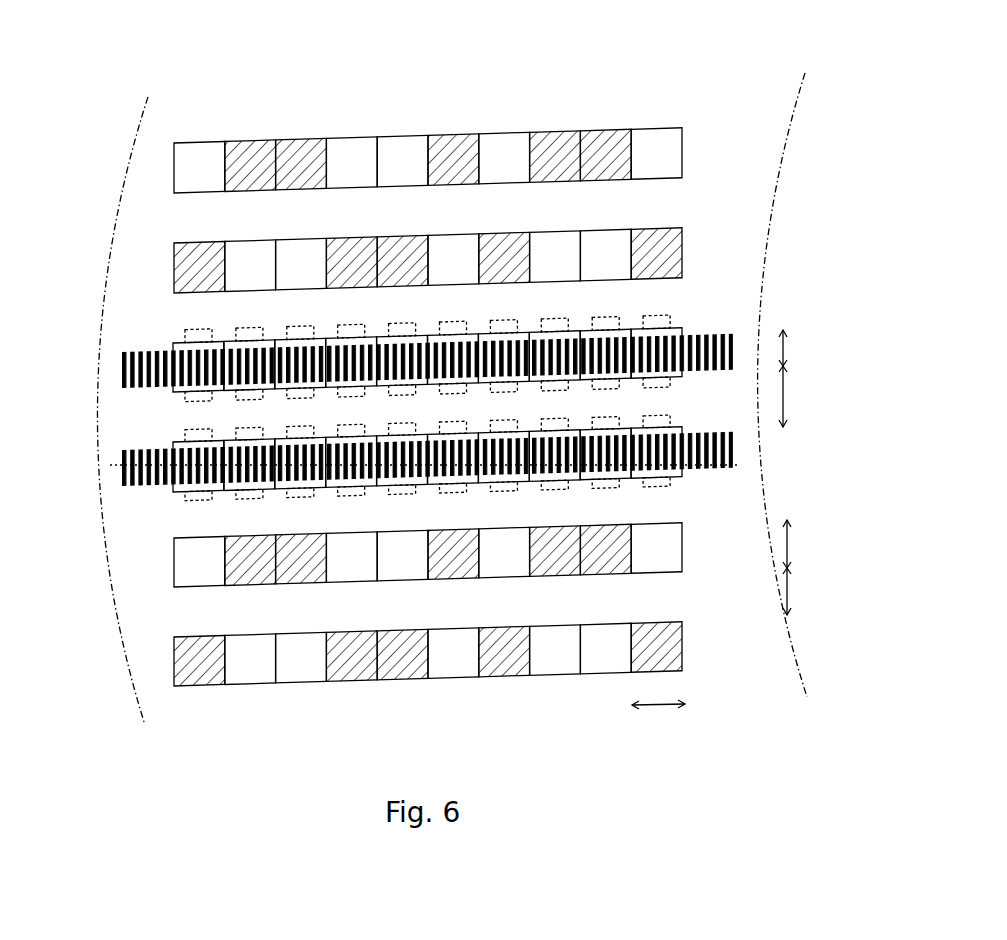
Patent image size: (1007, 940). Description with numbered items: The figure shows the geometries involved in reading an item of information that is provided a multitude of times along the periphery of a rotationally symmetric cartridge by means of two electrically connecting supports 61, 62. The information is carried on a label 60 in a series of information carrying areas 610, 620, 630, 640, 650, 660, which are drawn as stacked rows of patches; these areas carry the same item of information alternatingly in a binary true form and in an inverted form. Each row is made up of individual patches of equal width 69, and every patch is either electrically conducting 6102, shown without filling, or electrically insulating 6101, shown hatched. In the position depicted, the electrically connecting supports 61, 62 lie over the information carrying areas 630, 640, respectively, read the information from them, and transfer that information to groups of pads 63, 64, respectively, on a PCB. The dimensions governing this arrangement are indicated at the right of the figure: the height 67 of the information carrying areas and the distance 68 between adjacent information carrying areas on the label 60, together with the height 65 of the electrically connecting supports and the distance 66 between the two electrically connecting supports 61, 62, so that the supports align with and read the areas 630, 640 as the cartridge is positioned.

The label 60 is at (110, 206).
The electrically connecting support 61 is at (118, 370).
The electrically connecting support 62 is at (120, 465).
The group of pads 63 is at (668, 315).
The group of pads 64 is at (682, 483).
The height of electrically connecting supports 65 is at (786, 345).
The distance between electrically connecting supports 66 is at (786, 398).
The height of information carrying areas 67 is at (788, 543).
The distance between information carrying areas 68 is at (788, 593).
The width of patches 69 is at (657, 705).
The information carrying area 610 is at (384, 121).
The information carrying area 620 is at (173, 274).
The information carrying area 630 is at (173, 343).
The information carrying area 640 is at (173, 493).
The information carrying area 650 is at (173, 565).
The information carrying area 660 is at (173, 662).
The electrically insulating patch 6101 is at (600, 140).
The electrically conducting patch 6102 is at (655, 140).